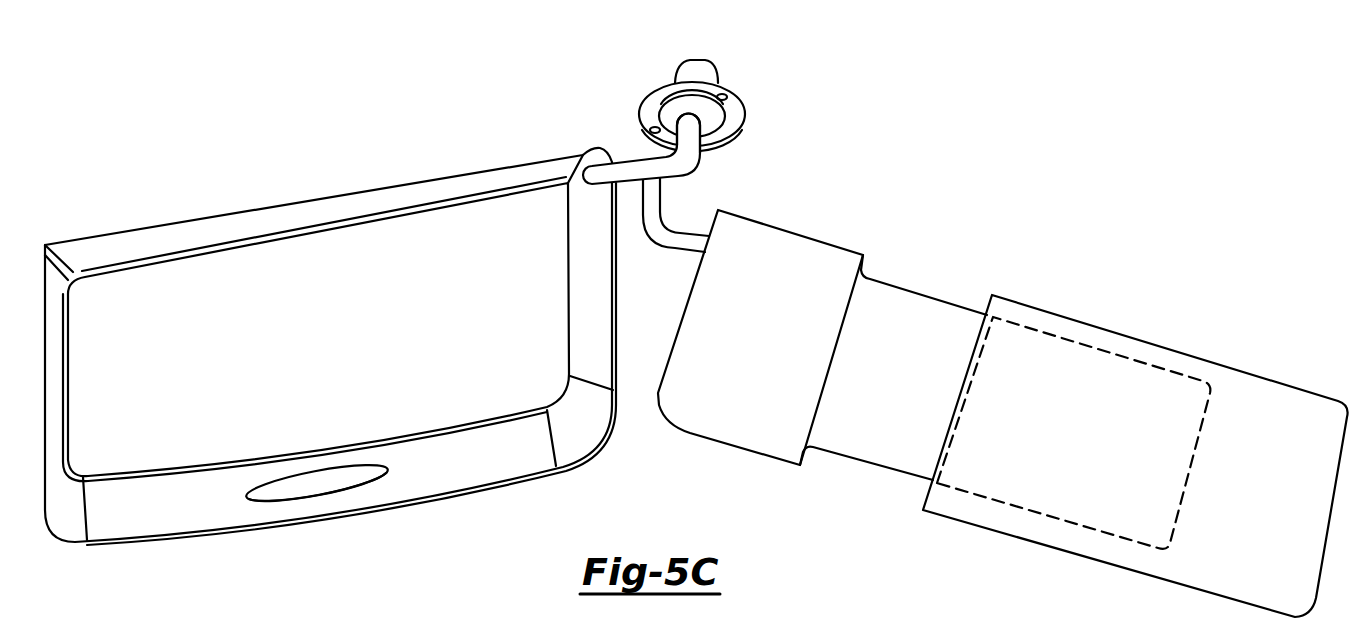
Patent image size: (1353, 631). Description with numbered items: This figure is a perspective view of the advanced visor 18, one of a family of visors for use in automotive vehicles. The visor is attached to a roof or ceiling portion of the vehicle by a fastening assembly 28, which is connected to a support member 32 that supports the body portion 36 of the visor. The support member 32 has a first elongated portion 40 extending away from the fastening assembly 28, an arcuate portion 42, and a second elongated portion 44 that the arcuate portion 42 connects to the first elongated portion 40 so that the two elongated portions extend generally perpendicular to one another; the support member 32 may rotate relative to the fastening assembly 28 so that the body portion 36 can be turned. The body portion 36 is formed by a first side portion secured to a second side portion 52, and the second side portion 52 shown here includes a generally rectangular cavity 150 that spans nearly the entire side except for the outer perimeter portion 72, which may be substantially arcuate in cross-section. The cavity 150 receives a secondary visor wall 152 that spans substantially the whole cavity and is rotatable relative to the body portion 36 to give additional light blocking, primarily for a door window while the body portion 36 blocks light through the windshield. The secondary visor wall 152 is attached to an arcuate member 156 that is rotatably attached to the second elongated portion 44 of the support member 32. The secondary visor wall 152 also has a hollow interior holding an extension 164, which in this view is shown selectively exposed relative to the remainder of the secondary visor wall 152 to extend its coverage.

The advanced visor 18 is at (696, 315).
The fastening assembly 28 is at (757, 100).
The support member 32 is at (621, 188).
The body portion 36 is at (397, 517).
The first elongated portion 40 is at (697, 64).
The arcuate portion 42 is at (684, 159).
The second elongated portion 44 is at (632, 158).
The second side portion 52 is at (275, 285).
The outer perimeter portion 72 is at (192, 503).
The cavity 150 is at (381, 273).
The secondary visor wall 152 is at (1100, 342).
The arcuate member 156 is at (653, 230).
The extension 164 is at (927, 322).